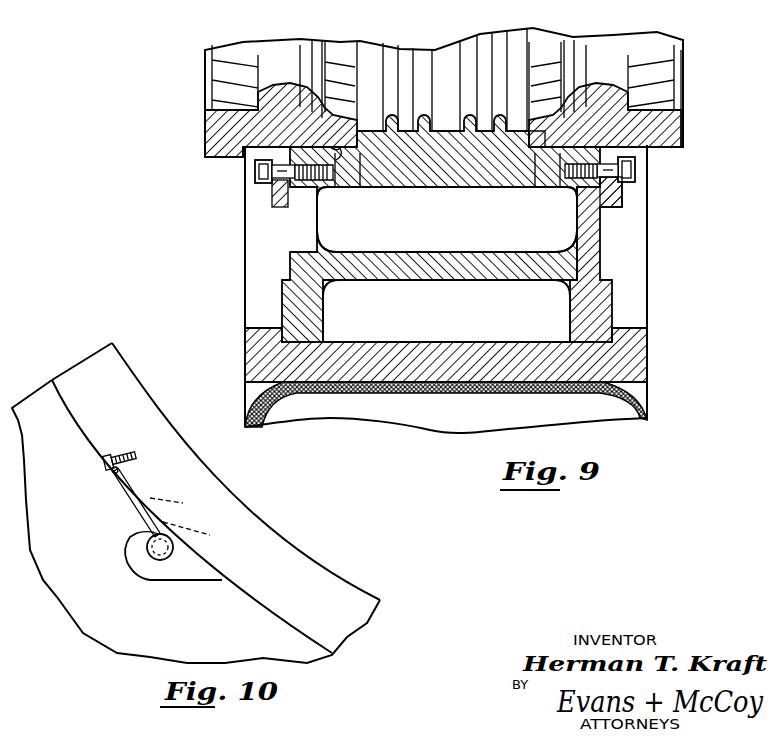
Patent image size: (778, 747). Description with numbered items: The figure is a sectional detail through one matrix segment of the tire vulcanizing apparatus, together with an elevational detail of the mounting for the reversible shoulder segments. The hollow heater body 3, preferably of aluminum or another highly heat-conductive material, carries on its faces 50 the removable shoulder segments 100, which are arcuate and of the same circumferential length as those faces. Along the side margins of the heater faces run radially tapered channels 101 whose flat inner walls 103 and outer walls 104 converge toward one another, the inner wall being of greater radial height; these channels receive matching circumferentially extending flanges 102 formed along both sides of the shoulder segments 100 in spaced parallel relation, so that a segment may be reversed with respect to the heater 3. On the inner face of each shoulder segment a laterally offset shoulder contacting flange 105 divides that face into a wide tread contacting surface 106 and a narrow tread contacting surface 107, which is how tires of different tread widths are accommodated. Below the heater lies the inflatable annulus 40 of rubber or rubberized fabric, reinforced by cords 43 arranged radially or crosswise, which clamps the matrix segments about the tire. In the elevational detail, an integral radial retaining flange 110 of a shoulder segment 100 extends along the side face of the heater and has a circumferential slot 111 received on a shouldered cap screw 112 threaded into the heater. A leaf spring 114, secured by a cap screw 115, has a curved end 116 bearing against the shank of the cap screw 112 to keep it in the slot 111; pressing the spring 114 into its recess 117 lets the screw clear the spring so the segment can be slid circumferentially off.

In FIG. 9, the hollow heater body 3 is at (590, 258).
In FIG. 9, the inflatable annulus 40 is at (648, 413).
In FIG. 9, the cords 43 is at (352, 384).
In FIG. 9, the faces of the heaters 50 is at (442, 133).
In FIG. 9, the removable shoulder segments 100 is at (272, 50).
In FIG. 10, the removable shoulder segments 100 is at (128, 392).
In FIG. 9, the channels 101 is at (340, 187).
In FIG. 9, the circumferentially extending flanges 102 is at (365, 187).
In FIG. 9, the inner walls 103 is at (550, 150).
In FIG. 9, the outer walls 104 is at (567, 143).
In FIG. 9, the shoulder contacting flange 105 is at (298, 72).
In FIG. 9, the wide tread contacting surface 106 is at (667, 68).
In FIG. 9, the narrow tread contacting surface 107 is at (338, 50).
In FIG. 9, the retaining flanges 110 is at (275, 202).
In FIG. 10, the retaining flanges 110 is at (136, 558).
In FIG. 10, the slots 111 is at (140, 528).
In FIG. 9, the shouldered cap screws 112 is at (253, 175).
In FIG. 10, the shouldered cap screws 112 is at (143, 563).
In FIG. 10, the leaf springs 114 is at (150, 518).
In FIG. 10, the cap screws 115 is at (107, 476).
In FIG. 10, the curved ends 116 is at (202, 535).
In FIG. 10, the recesses 117 is at (183, 504).